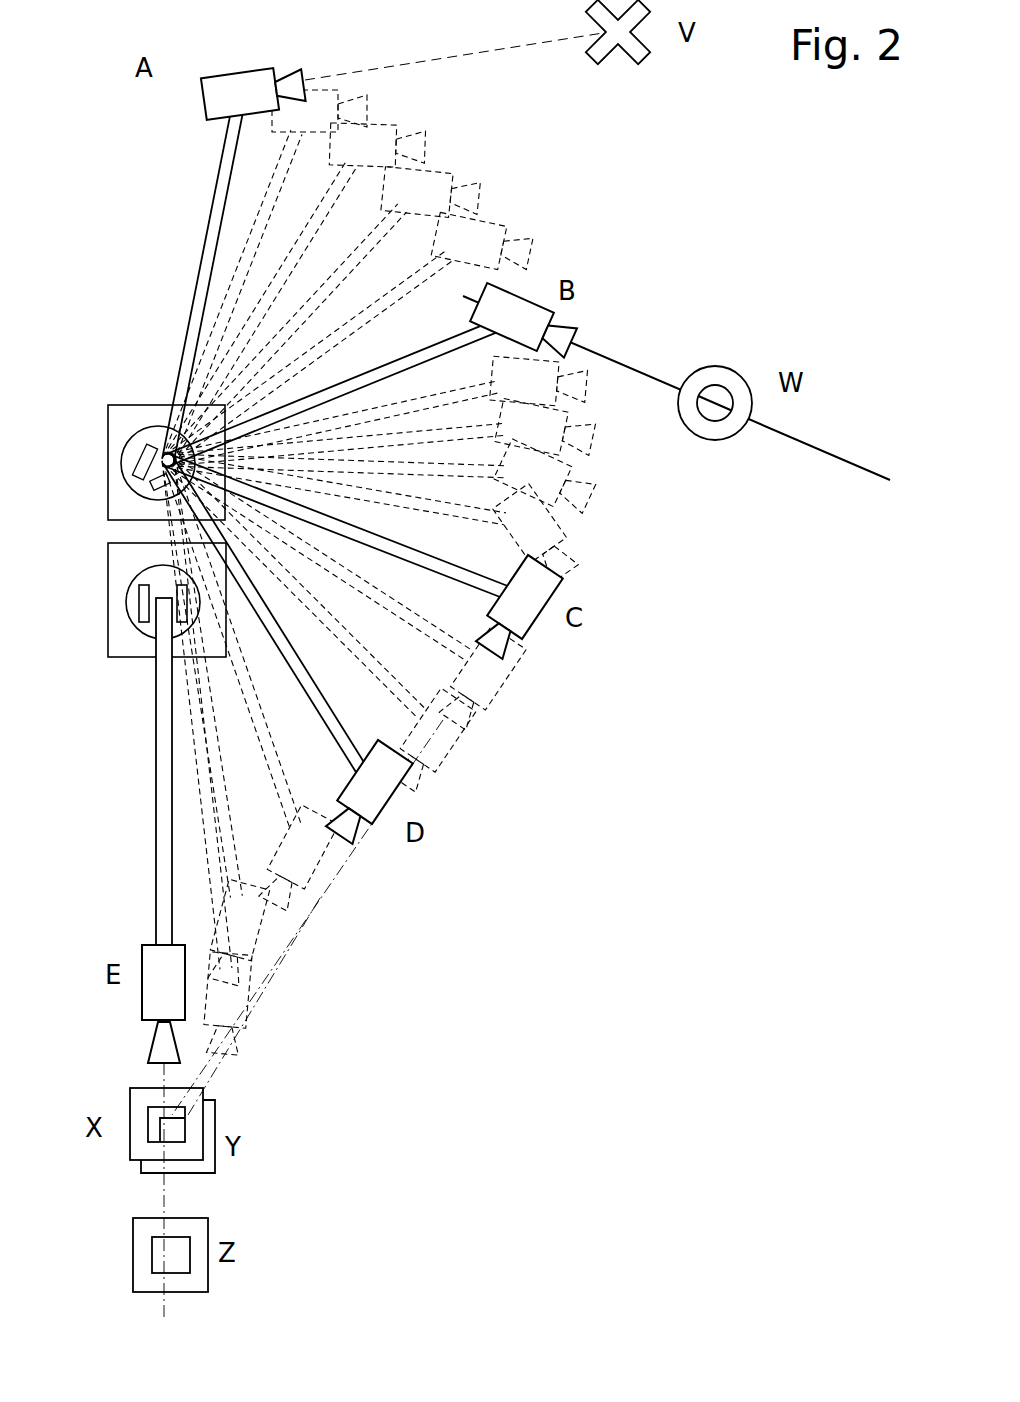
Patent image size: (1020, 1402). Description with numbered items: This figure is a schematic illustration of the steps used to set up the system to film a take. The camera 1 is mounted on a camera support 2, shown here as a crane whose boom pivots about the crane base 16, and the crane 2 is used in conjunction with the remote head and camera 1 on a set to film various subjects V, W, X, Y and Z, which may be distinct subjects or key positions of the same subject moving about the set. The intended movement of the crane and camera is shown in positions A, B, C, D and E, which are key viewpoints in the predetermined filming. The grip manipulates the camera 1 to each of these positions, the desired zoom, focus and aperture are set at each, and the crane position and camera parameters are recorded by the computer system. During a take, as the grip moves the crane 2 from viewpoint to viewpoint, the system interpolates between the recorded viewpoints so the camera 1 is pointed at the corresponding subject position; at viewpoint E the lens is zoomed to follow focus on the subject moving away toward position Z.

The camera 1 is at (200, 105).
The camera support 2 is at (165, 264).
The crane base 16 is at (105, 455).